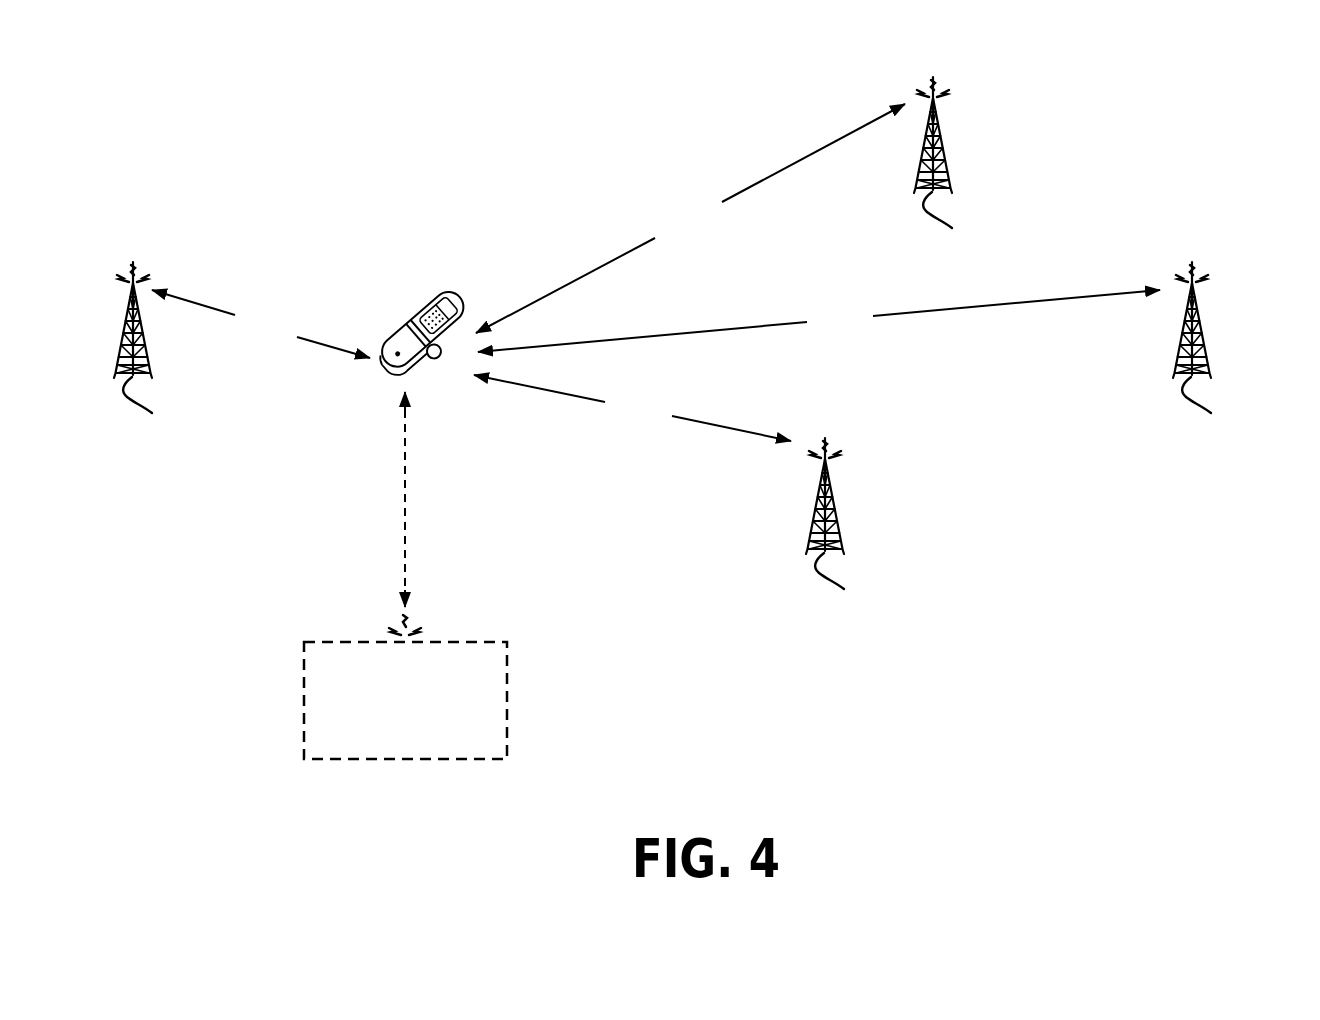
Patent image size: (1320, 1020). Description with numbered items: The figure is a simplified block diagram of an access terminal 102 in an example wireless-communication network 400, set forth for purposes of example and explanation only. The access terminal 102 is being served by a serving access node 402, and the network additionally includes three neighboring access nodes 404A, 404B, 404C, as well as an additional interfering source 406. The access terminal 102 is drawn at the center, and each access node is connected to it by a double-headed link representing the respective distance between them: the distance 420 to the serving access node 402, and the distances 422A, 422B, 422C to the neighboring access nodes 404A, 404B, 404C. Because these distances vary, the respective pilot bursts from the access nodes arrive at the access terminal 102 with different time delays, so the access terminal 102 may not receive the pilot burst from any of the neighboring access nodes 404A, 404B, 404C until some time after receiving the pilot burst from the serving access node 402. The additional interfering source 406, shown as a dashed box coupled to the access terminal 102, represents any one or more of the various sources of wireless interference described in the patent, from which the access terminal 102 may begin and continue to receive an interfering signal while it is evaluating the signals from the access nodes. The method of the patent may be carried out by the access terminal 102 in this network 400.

The wireless-communication network 400 is at (1229, 94).
The serving access node 402 is at (174, 352).
The neighboring access node 404A is at (1236, 352).
The neighboring access node 404B is at (978, 168).
The neighboring access node 404C is at (868, 528).
The access terminal 102 is at (388, 342).
The distance 420 is at (261, 324).
The distance 422A is at (819, 321).
The distance 422B is at (690, 218).
The distance 422C is at (632, 408).
The additional interfering source 406 is at (408, 762).